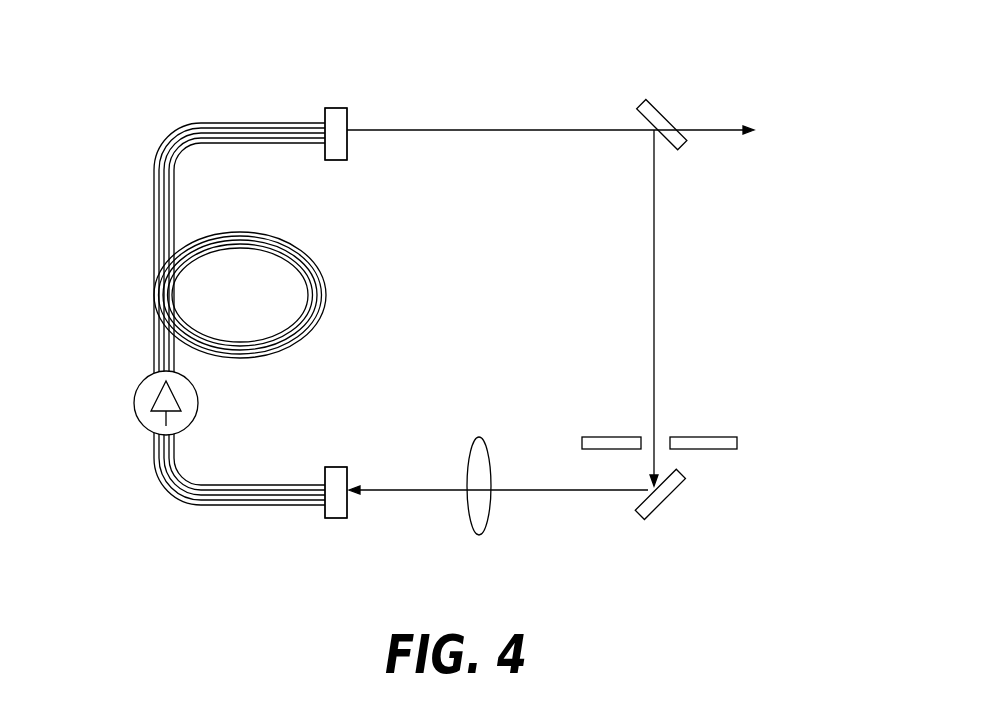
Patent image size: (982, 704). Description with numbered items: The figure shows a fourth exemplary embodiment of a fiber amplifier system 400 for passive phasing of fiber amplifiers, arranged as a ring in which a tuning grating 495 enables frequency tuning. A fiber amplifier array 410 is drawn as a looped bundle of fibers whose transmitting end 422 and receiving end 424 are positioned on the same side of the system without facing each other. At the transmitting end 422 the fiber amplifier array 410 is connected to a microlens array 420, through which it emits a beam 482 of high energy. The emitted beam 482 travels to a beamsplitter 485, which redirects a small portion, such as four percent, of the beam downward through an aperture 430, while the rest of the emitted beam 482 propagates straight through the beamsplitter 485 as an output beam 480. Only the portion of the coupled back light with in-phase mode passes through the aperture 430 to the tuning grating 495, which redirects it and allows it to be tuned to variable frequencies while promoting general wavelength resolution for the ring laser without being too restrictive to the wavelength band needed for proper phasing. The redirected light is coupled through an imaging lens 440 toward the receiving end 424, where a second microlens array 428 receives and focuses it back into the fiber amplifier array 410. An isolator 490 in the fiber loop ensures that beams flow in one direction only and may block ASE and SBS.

The fiber amplifier system 400 is at (601, 36).
The fiber amplifier array 410 is at (153, 175).
The microlens array 420 is at (347, 108).
The transmitting end 422 is at (325, 100).
The receiving end 424 is at (352, 523).
The microlens array 428 is at (312, 515).
The aperture 430 is at (728, 427).
The imaging lens 440 is at (479, 437).
The output beam 480 is at (700, 133).
The emitted beam 482 is at (600, 131).
The beamsplitter 485 is at (732, 83).
The isolator 490 is at (190, 428).
The tuning grating 495 is at (730, 511).